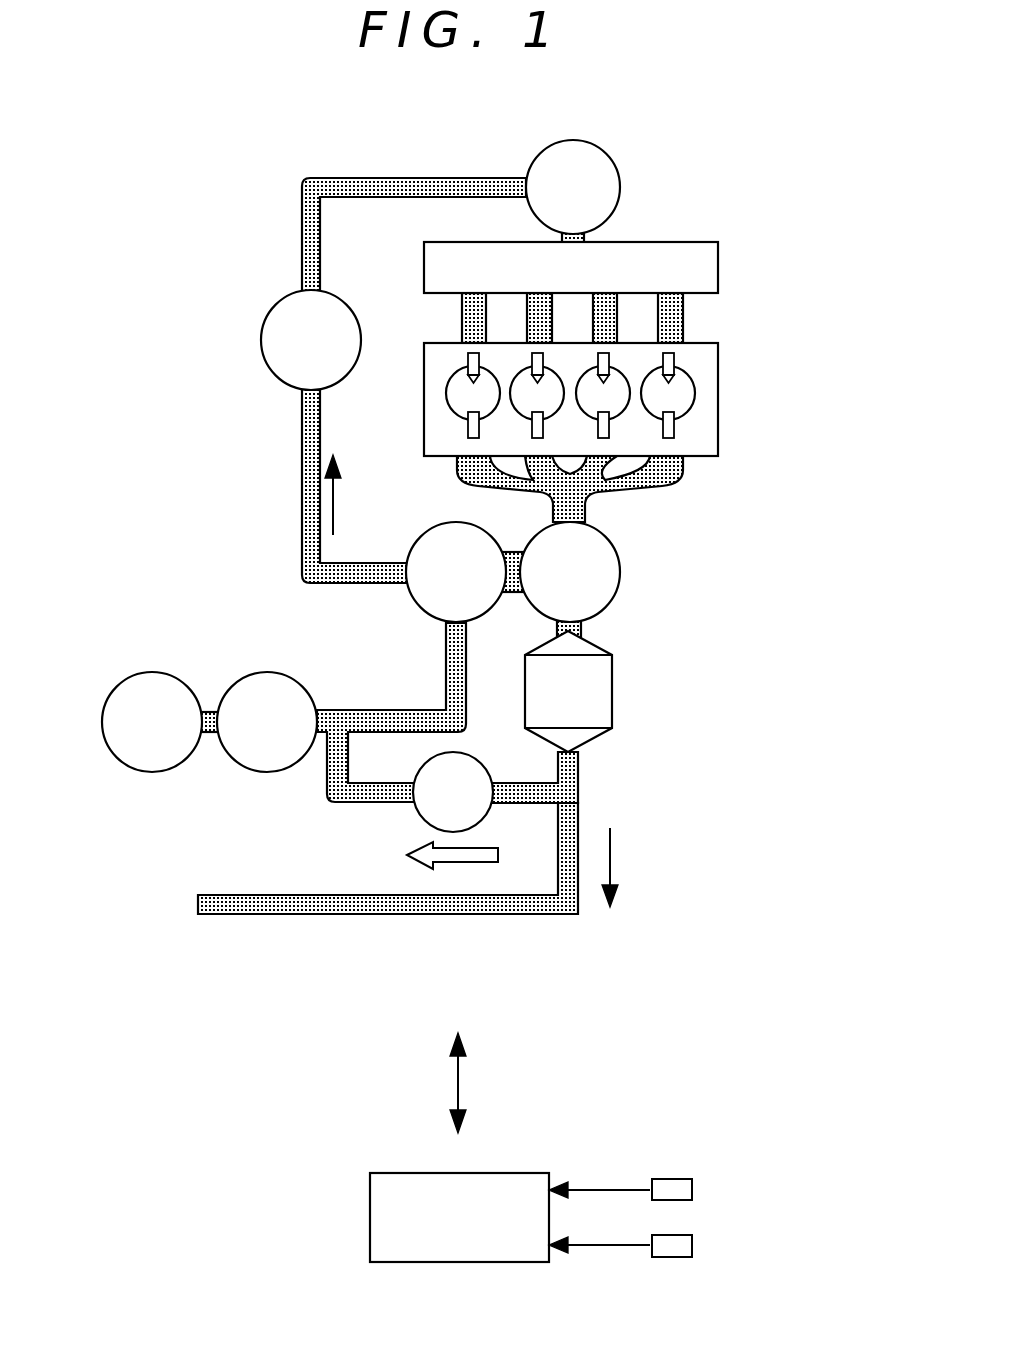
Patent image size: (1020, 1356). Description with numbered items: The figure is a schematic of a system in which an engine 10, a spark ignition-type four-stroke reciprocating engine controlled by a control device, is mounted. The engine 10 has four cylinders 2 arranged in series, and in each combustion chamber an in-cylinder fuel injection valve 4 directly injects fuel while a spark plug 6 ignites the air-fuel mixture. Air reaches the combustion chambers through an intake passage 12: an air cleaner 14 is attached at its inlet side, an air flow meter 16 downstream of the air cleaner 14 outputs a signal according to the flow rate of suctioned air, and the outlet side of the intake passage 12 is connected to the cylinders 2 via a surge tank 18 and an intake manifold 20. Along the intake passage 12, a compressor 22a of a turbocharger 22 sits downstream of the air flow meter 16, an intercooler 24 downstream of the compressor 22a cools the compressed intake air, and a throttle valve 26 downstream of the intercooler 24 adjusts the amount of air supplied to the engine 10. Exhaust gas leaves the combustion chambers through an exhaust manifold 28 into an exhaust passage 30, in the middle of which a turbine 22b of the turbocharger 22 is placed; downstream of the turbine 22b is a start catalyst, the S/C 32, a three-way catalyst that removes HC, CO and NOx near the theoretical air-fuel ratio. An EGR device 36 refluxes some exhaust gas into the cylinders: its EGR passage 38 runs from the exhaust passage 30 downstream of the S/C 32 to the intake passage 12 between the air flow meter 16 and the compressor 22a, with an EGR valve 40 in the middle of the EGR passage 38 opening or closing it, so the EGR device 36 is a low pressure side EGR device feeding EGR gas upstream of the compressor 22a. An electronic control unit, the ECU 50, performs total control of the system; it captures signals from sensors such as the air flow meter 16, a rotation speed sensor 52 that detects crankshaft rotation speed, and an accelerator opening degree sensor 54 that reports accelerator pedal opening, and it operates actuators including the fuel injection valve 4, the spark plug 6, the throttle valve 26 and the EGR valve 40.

The cylinder 2 is at (588, 433).
The in-cylinder fuel injection valve 4 is at (680, 355).
The spark plug 6 is at (680, 430).
The engine 10 is at (408, 452).
The intake passage 12 is at (436, 178).
The air cleaner 14 is at (155, 672).
The air flow meter 16 is at (265, 672).
The surge tank 18 is at (640, 242).
The intake manifold 20 is at (683, 317).
The turbocharger 22 is at (522, 601).
The compressor 22a is at (413, 602).
The turbine 22b is at (613, 603).
The intercooler 24 is at (260, 340).
The throttle valve 26 is at (573, 140).
The exhaust manifold 28 is at (640, 488).
The exhaust passage 30 is at (307, 915).
The start catalyst (S/C) 32 is at (613, 691).
The EGR device 36 is at (352, 824).
The EGR passage 38 is at (518, 786).
The EGR valve 40 is at (465, 755).
The electronic control unit (ECU) 50 is at (513, 1173).
The rotation speed sensor 52 is at (695, 1190).
The accelerator opening degree sensor 54 is at (695, 1245).